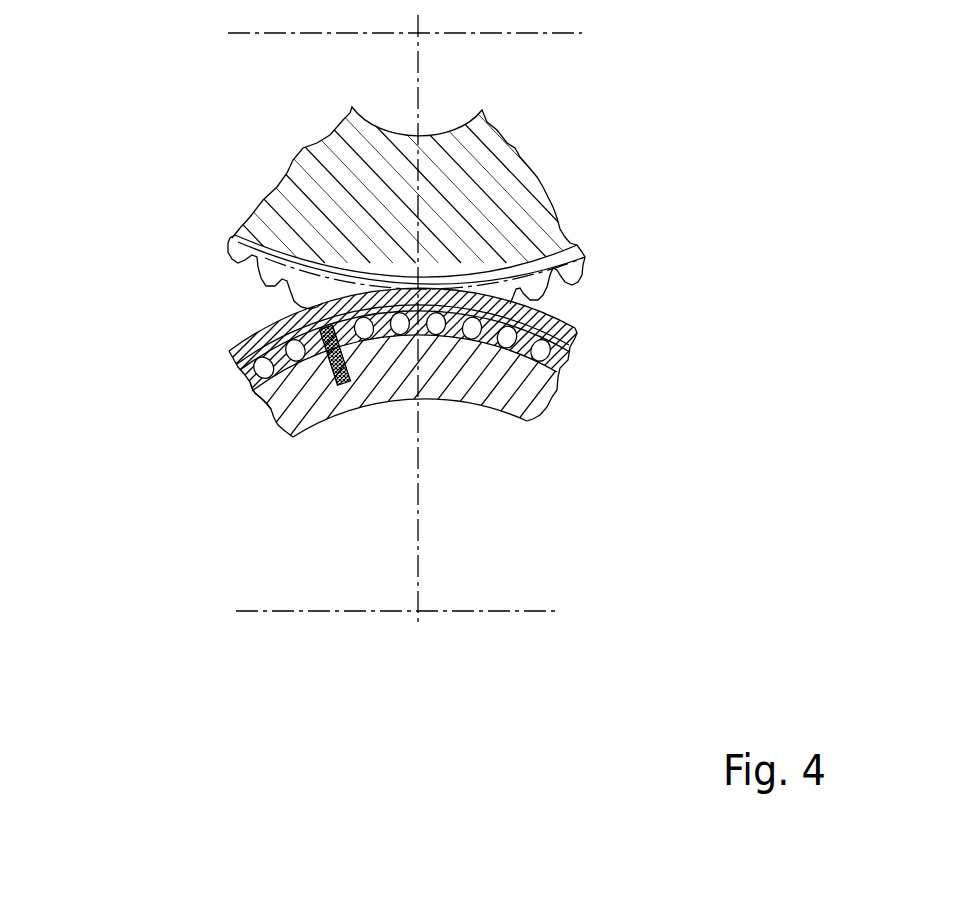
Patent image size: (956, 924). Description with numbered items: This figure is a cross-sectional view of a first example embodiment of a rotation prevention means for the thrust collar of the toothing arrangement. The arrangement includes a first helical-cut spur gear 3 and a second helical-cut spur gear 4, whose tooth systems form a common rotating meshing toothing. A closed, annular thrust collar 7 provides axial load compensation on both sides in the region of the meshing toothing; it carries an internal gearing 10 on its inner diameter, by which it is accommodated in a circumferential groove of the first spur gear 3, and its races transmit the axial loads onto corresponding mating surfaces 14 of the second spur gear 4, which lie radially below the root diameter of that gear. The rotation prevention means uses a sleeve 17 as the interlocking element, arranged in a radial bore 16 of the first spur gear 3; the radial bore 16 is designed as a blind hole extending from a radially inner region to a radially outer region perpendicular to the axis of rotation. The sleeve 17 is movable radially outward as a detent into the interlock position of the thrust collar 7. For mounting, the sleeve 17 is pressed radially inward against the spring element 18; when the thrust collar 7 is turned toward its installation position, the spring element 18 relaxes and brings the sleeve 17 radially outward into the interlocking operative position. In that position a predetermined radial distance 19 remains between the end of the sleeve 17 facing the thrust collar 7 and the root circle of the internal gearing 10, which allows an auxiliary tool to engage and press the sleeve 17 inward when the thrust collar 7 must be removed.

The first helical-cut spur gear 3 is at (362, 390).
The second helical-cut spur gear 4 is at (325, 190).
The thrust collar 7 is at (268, 342).
The internal gearing 10 is at (229, 352).
The mating surfaces 14 is at (241, 229).
The radial bore 16 is at (270, 406).
The sleeve 17 is at (347, 357).
The spring element 18 is at (293, 437).
The radial distance 19 is at (340, 316).